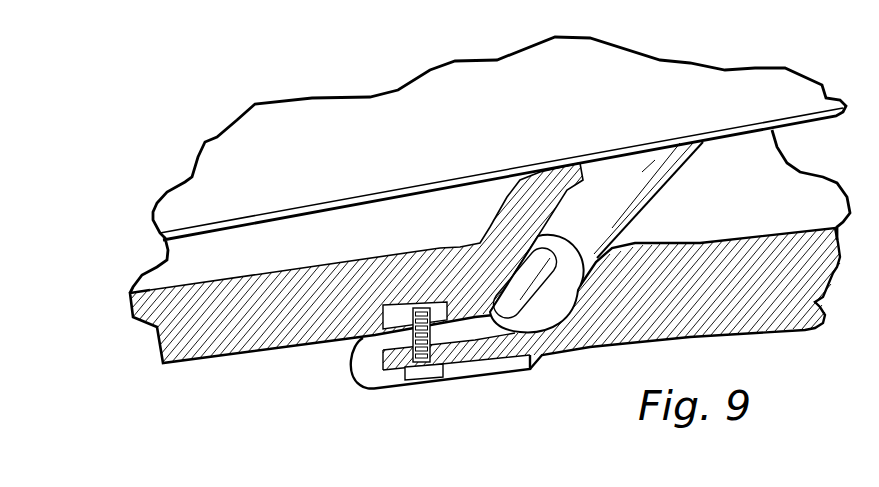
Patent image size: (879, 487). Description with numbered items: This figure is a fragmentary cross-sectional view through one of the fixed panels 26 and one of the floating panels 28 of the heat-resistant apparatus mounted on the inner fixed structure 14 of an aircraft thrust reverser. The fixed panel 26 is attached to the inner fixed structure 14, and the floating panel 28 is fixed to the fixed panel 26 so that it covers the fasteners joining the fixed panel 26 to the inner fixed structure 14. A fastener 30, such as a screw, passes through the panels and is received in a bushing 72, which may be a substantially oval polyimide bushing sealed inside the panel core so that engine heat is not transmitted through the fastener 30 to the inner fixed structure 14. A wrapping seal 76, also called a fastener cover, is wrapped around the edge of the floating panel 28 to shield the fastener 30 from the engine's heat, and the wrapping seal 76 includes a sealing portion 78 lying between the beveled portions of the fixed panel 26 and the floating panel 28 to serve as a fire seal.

The inner fixed structure 14 is at (645, 95).
The fixed panel 26 is at (200, 360).
The floating panel 28 is at (755, 323).
The fastener 30 is at (425, 372).
The bushing 72 is at (395, 314).
The wrapping seal 76 is at (360, 362).
The sealing portion 78 is at (540, 284).